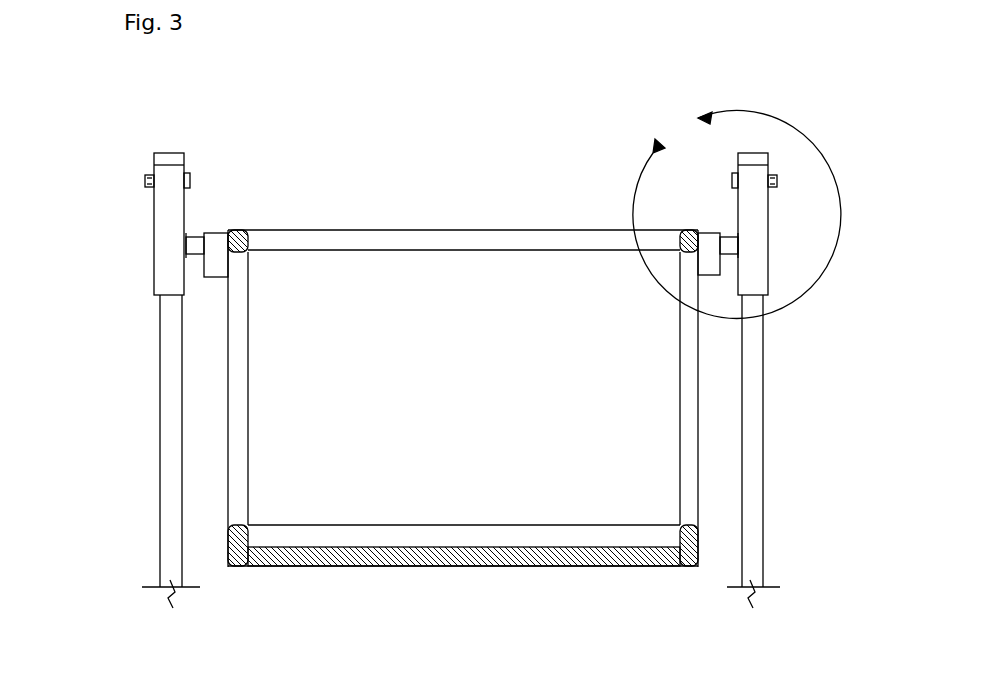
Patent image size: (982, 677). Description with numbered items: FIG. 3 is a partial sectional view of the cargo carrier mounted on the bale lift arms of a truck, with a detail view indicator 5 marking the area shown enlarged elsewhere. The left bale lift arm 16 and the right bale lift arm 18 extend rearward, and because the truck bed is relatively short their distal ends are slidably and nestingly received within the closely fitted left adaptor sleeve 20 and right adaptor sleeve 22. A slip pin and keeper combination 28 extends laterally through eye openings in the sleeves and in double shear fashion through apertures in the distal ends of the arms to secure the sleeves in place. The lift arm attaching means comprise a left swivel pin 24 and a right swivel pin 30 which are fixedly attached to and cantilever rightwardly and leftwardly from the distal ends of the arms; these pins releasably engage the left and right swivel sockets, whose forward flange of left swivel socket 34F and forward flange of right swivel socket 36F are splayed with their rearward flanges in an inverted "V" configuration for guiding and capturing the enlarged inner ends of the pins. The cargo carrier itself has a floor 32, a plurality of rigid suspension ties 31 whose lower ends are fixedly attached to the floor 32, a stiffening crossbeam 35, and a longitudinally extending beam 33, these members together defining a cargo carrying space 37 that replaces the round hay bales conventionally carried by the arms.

The detail view indicator 5 is at (737, 214).
The left bale lift arm 16 is at (753, 427).
The right bale lift arm 18 is at (173, 400).
The left adaptor sleeve 20 is at (763, 260).
The right adaptor sleeve 22 is at (165, 267).
The left swivel pin 24 is at (732, 242).
The slip pin and keeper combination 28 is at (780, 180).
The right swivel pin 30 is at (145, 180).
The rigid suspension ties 31 is at (243, 380).
The floor 32 is at (490, 553).
The longitudinally extending beam 33 is at (248, 252).
The forward flange of left swivel socket 34F is at (708, 275).
The stiffening crossbeam 35 is at (415, 237).
The forward flange of right swivel socket 36F is at (217, 267).
The cargo carrying space 37 is at (423, 401).